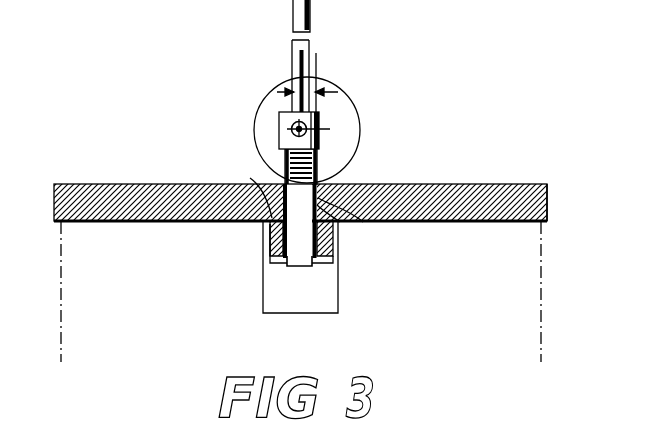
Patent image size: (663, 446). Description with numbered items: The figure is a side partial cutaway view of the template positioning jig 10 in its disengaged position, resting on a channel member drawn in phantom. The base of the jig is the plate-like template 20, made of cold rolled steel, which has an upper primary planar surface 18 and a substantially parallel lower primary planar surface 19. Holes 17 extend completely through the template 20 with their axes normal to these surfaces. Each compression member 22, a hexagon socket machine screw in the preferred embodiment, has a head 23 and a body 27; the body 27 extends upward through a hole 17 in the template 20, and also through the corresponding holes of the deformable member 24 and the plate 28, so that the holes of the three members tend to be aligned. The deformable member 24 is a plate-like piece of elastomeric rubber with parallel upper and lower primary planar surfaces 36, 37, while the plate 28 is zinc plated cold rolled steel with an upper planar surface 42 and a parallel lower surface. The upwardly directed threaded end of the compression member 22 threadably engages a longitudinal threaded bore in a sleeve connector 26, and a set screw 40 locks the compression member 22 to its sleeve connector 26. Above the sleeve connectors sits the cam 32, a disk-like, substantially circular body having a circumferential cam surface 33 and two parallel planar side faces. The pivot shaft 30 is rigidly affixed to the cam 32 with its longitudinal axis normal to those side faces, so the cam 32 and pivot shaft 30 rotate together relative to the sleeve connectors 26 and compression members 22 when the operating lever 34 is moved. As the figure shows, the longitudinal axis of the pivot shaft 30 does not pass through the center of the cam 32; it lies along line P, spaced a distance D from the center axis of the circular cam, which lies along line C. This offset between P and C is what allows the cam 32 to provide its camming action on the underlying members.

The template positioning jig 10 is at (150, 44).
The holes 17 is at (320, 170).
The upper primary planar surface 18 is at (128, 183).
The lower primary planar surface 19 is at (542, 222).
The template 20 is at (555, 203).
The compression members 22 is at (340, 222).
The head 23 is at (297, 266).
The deformable member 24 is at (270, 232).
The sleeve connectors 26 is at (279, 112).
The body 27 is at (363, 222).
The plate 28 is at (263, 267).
The pivot shaft 30 is at (258, 153).
The cam 32 is at (357, 103).
The circumferential cam surface 33 is at (371, 132).
The operating lever 34 is at (292, 8).
The upper primary planar surface 36 is at (250, 178).
The lower primary planar surface 37 is at (331, 264).
The set screws 40 is at (322, 166).
The upper planar surface 42 is at (270, 240).
The line P is at (292, 61).
The line C is at (316, 53).
The distance D is at (322, 83).